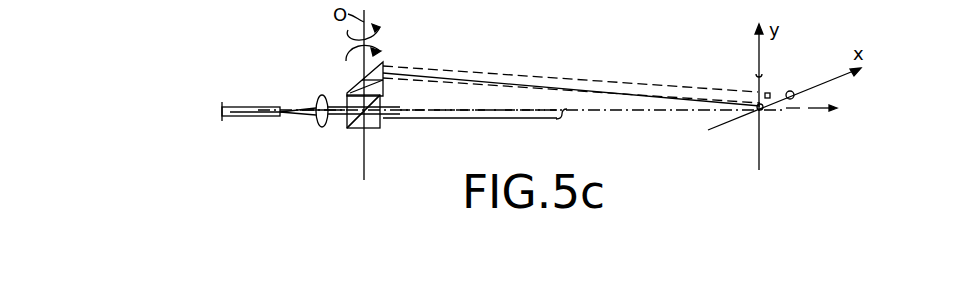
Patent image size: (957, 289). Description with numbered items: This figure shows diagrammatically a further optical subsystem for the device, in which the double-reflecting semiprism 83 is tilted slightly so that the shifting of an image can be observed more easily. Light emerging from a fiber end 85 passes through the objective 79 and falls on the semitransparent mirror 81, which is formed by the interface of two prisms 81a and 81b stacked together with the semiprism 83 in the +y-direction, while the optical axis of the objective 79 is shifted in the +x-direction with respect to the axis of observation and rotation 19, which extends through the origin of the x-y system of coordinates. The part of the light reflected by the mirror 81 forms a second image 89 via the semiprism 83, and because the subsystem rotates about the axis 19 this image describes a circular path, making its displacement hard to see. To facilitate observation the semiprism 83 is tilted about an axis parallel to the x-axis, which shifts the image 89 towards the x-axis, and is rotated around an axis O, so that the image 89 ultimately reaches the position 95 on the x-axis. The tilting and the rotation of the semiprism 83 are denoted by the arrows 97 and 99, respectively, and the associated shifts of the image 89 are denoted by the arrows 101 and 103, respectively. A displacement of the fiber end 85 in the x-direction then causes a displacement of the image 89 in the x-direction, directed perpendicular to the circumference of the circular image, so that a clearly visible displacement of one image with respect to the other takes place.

The axis of observation and rotation 19 is at (834, 111).
The objective 79 is at (319, 127).
The semitransparent mirror 81 is at (361, 138).
The prism 81a is at (348, 118).
The prism 81b is at (377, 130).
The double-reflecting semiprism 83 is at (356, 88).
The fiber end 85 is at (246, 117).
The second image 89 is at (755, 72).
The position on the x-axis 95 is at (793, 108).
The arrow denoting tilting of the semi-prism 97 is at (382, 51).
The arrow denoting rotation of the semi-prism 99 is at (382, 27).
The arrow denoting shift of the image 101 is at (783, 96).
The arrow denoting shift of the image 103 is at (792, 91).